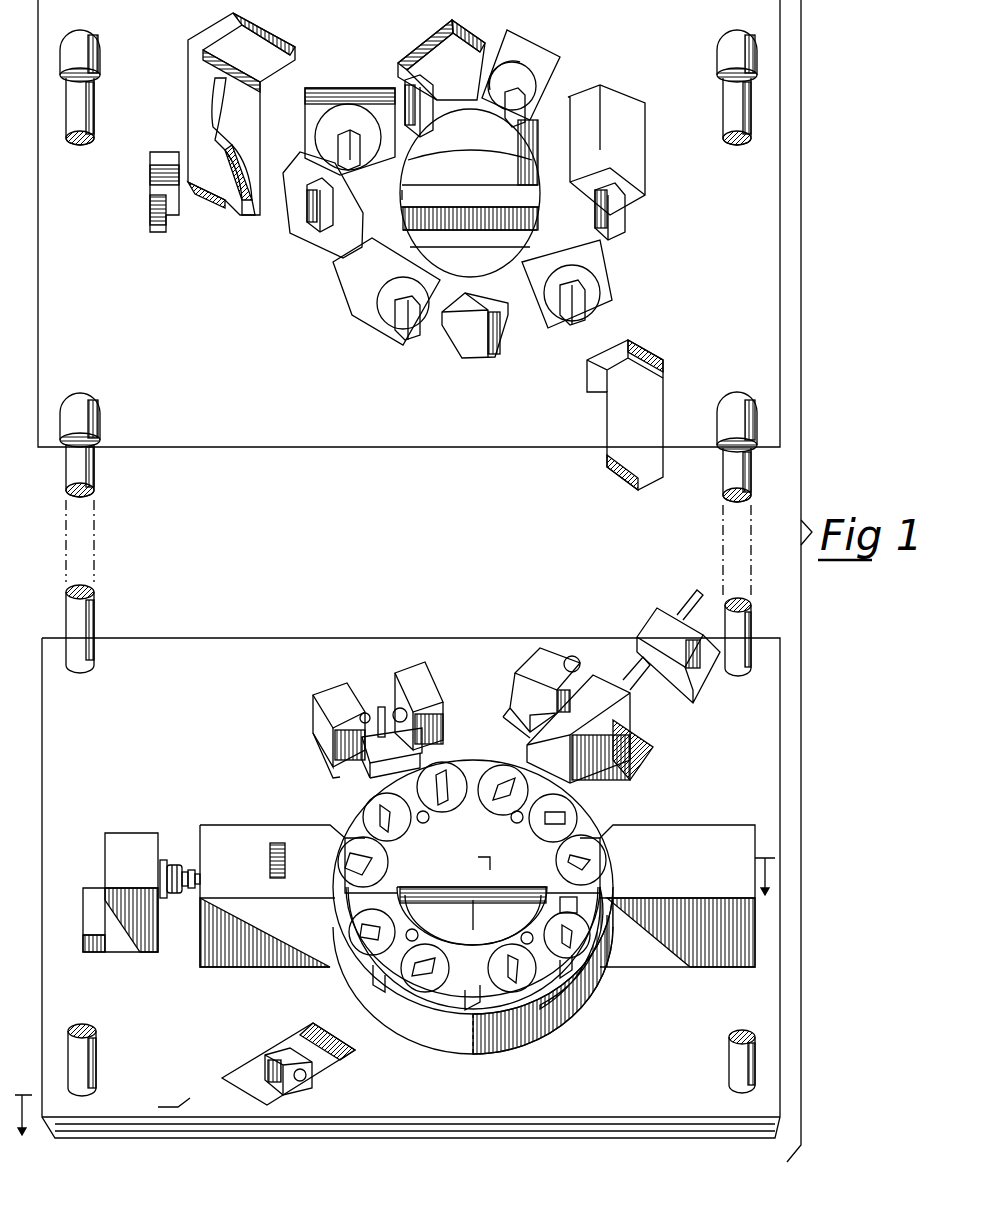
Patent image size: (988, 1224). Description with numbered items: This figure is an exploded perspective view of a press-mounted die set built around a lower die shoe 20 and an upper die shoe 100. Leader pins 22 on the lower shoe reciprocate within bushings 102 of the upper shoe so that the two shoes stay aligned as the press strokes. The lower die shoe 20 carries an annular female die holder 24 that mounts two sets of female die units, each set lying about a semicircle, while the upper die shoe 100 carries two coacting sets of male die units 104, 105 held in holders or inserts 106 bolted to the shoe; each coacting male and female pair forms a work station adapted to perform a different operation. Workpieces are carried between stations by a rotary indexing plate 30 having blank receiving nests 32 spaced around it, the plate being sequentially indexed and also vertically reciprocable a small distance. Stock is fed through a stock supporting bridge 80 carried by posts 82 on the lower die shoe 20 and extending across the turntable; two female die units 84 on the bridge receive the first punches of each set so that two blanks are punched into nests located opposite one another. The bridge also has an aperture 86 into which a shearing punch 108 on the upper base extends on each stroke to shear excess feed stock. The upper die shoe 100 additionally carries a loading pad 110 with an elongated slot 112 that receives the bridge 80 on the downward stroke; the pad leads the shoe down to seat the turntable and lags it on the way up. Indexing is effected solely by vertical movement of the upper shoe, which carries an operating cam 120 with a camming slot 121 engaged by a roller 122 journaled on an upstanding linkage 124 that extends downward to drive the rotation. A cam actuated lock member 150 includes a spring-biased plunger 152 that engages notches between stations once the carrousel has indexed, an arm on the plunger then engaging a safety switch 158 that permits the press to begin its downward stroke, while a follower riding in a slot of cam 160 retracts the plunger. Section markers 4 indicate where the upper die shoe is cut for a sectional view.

The lower die shoe 20 is at (590, 1076).
The leader pins 22 is at (94, 108).
The female die holder 24 is at (458, 1048).
The rotary indexing plate 30 is at (425, 1010).
The nests 32 is at (500, 778).
The section line 4 is at (394, 1010).
The stock supporting bridge 80 is at (446, 868).
The posts 82 is at (285, 936).
The female die units 84 is at (350, 845).
The aperture 86 is at (275, 843).
The upper die shoe 100 is at (702, 279).
The bushings 102 is at (100, 46).
The male die units 104 is at (350, 142).
The male die units 105 is at (330, 272).
The holders or inserts 106 is at (560, 52).
The shearing punch 108 is at (166, 236).
The loading pad 110 is at (486, 182).
The elongated slot 112 is at (404, 200).
The operating cam 120 is at (255, 99).
The camming slot 121 is at (238, 142).
The roller 122 is at (268, 1058).
The upstanding linkage 124 is at (312, 1068).
The cam actuated lock member 150 is at (682, 740).
The plunger 152 is at (630, 680).
The safety switch 158 is at (535, 660).
The cam 160 is at (645, 352).